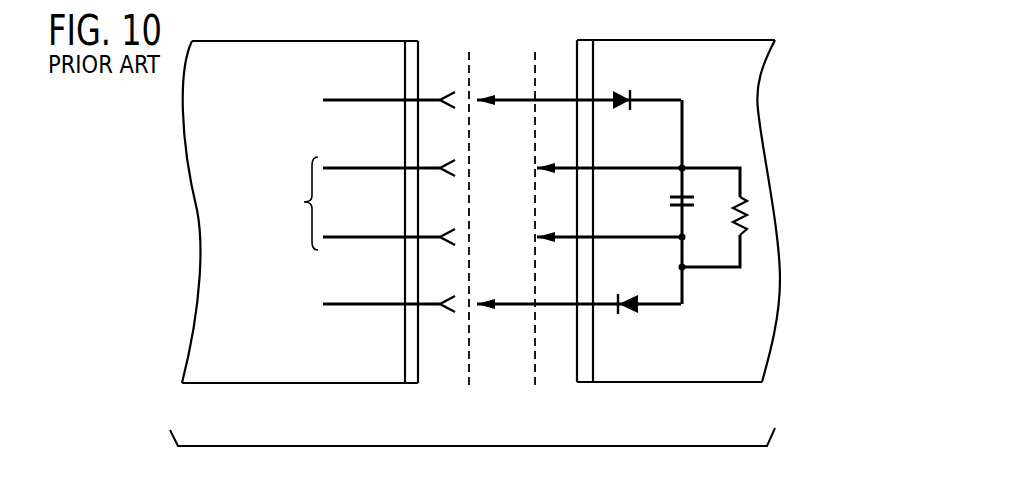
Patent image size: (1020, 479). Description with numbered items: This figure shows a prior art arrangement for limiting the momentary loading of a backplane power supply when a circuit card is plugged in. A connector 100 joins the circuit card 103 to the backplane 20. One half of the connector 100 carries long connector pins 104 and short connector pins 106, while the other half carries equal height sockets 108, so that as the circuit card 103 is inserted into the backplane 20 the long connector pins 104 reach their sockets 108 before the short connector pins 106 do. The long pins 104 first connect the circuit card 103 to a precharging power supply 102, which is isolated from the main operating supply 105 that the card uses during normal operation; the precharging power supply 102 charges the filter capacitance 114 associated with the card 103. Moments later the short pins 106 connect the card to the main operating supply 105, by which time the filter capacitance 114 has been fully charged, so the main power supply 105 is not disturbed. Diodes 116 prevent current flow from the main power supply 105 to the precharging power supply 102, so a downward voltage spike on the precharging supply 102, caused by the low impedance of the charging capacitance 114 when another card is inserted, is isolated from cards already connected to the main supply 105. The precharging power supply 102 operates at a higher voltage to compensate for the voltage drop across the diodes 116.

The backplane 20 is at (283, 383).
The connector 100 is at (408, 383).
The precharging power supply 102 is at (312, 302).
The circuit card 103 is at (700, 40).
The long connector pins 104 is at (510, 98).
The main operating supply 105 is at (290, 203).
The short connector pins 106 is at (567, 233).
The sockets 108 is at (433, 103).
The filter capacitance 114 is at (670, 198).
The diodes 116 is at (620, 92).